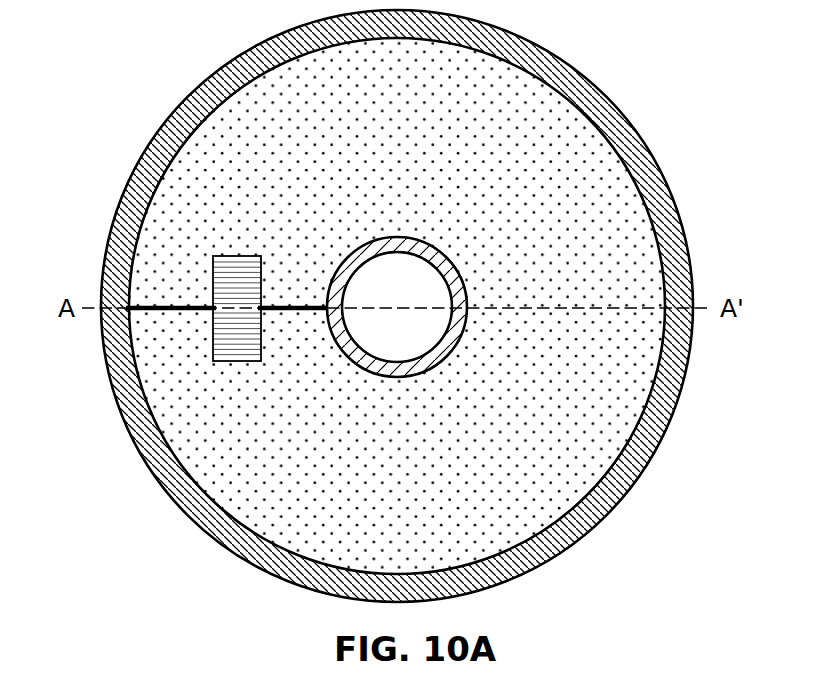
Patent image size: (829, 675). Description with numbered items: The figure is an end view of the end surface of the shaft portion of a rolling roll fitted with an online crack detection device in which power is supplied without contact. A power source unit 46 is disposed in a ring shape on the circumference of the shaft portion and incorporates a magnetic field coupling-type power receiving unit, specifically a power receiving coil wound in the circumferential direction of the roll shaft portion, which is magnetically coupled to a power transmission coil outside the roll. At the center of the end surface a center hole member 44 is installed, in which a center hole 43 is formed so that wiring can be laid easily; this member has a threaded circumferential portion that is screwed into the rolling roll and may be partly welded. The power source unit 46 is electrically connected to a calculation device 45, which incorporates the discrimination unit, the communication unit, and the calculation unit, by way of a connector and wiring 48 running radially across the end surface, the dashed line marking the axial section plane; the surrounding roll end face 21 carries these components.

The substrate body 21 is at (632, 392).
The center hole 43 is at (383, 275).
The center hole member 44 is at (447, 253).
The calculation device 45 is at (212, 281).
The power source unit 46 is at (172, 127).
The wiring 48 is at (182, 311).